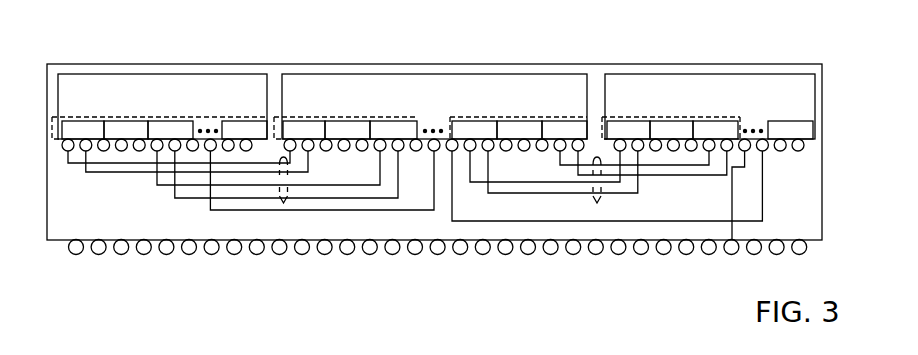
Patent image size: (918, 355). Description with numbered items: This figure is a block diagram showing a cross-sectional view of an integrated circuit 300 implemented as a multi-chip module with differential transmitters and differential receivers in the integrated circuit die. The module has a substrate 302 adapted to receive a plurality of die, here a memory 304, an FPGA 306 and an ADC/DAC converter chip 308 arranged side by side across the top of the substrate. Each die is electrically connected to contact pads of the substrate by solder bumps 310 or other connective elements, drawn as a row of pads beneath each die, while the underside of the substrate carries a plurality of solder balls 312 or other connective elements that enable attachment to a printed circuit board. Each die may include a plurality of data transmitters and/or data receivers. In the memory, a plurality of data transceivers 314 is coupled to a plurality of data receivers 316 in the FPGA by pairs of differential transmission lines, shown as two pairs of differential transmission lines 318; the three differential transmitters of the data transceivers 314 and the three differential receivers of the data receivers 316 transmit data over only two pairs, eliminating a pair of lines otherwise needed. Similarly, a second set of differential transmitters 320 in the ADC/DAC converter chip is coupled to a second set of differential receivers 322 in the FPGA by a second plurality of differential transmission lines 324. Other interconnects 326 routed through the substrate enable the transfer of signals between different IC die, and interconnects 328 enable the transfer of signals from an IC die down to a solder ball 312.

The integrated circuit 300 is at (433, 164).
The substrate 302 is at (60, 240).
The memory 304 is at (162, 90).
The FPGA 306 is at (430, 90).
The ADC/DAC converter chip 308 is at (708, 90).
The solder bumps 310 is at (67, 152).
The solder balls 312 is at (99, 255).
The data transceivers 314 is at (202, 119).
The data receivers 316 is at (308, 117).
The differential transmission lines 318 is at (290, 183).
The second set of differential transmitters 320 is at (742, 119).
The second set of differential receivers 322 is at (502, 117).
The second plurality of differential transmission lines 324 is at (601, 201).
The interconnects 326 is at (447, 216).
The interconnects 328 is at (730, 173).